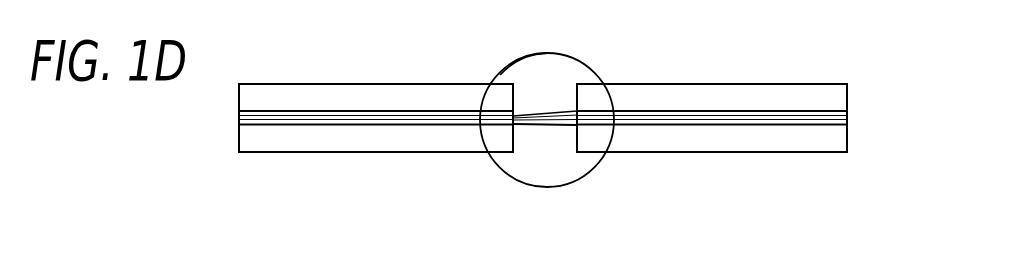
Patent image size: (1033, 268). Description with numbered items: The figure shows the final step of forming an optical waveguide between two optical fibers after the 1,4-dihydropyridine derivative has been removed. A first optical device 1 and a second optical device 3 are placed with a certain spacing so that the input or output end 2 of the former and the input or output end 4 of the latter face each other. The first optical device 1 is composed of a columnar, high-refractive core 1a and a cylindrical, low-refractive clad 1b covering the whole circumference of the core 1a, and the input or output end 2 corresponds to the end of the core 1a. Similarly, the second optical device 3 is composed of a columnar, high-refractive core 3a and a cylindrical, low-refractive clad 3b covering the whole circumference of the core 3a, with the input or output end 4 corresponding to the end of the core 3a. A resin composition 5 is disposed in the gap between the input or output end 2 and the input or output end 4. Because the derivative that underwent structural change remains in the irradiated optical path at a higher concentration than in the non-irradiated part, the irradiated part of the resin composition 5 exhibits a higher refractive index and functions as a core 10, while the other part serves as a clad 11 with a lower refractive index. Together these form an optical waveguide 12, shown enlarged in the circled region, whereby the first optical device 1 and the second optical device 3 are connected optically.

The first optical device 1 is at (294, 163).
The core 1a is at (430, 126).
The clad 1b is at (412, 84).
The second optical device 3 is at (759, 161).
The core 3a is at (640, 125).
The clad 3b is at (668, 84).
The input or output end 2 is at (518, 125).
The input or output end 4 is at (571, 103).
The resin composition 5 is at (505, 65).
The core 10 is at (550, 123).
The clad 11 is at (545, 70).
The optical waveguide 12 is at (496, 180).